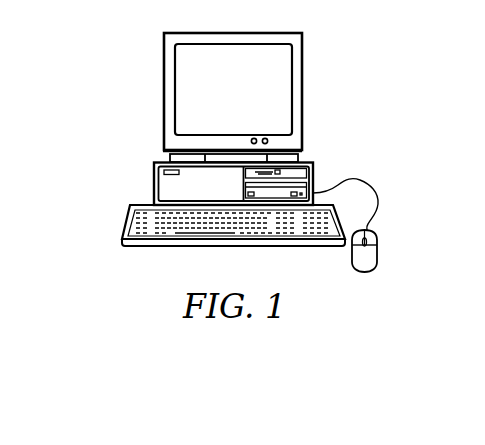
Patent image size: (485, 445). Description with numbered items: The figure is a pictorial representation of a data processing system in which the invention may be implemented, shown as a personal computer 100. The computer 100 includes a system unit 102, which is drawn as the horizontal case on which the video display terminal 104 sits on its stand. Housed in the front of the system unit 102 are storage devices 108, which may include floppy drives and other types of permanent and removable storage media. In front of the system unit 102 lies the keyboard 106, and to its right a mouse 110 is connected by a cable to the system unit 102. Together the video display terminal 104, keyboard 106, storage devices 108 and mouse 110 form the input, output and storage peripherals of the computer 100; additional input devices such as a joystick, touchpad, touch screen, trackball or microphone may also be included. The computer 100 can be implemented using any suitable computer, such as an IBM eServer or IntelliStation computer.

The computer 100 is at (108, 84).
The system unit 102 is at (154, 180).
The video display terminal 104 is at (302, 92).
The keyboard 106 is at (150, 246).
The storage devices 108 is at (283, 172).
The mouse 110 is at (368, 273).